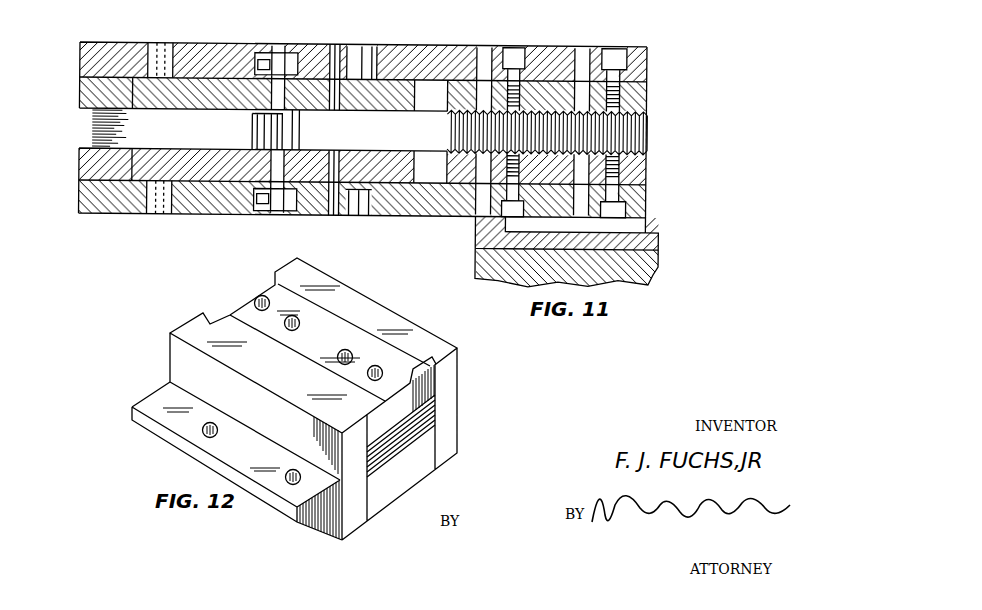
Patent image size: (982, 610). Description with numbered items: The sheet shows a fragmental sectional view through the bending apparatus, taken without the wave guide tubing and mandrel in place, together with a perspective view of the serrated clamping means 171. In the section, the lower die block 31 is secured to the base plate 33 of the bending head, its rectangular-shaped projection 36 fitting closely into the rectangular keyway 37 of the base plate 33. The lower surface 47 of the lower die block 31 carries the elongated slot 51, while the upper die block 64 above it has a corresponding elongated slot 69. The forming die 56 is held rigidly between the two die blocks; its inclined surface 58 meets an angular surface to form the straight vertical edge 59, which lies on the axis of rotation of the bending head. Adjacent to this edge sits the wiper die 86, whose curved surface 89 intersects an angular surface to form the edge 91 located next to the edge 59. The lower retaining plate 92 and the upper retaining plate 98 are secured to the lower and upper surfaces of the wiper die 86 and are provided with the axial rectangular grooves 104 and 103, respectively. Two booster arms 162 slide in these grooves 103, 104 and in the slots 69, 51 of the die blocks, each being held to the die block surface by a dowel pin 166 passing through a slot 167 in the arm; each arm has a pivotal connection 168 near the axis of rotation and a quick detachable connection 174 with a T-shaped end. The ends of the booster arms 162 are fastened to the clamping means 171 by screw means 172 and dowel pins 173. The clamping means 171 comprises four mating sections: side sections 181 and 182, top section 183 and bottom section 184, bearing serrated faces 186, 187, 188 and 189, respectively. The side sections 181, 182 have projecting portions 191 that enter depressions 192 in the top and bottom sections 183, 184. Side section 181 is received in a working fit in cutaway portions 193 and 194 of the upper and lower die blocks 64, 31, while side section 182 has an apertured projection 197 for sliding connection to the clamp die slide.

In FIG. 11, the lower die block 31 is at (167, 146).
In FIG. 11, the base plate 33 is at (647, 237).
In FIG. 11, the rectangular-shaped projection 36 is at (647, 222).
In FIG. 11, the rectangular keyway 37 is at (635, 230).
In FIG. 11, the lower surface of the lower die block 47 is at (453, 204).
In FIG. 11, the elongated slot 51 is at (355, 142).
In FIG. 11, the forming die 56 is at (393, 106).
In FIG. 11, the inclined surface 58 is at (291, 118).
In FIG. 11, the straight vertical edge 59 is at (283, 127).
In FIG. 11, the upper die block 64 is at (222, 74).
In FIG. 11, the elongated slot 69 is at (354, 82).
In FIG. 11, the wiper die 86 is at (88, 125).
In FIG. 11, the curved surface 89 is at (273, 109).
In FIG. 11, the edge 91 is at (270, 139).
In FIG. 11, the lower retaining plate 92 is at (78, 160).
In FIG. 11, the upper retaining plate 98 is at (80, 79).
In FIG. 11, the rectangular groove 103 is at (362, 95).
In FIG. 11, the rectangular groove 104 is at (212, 182).
In FIG. 11, the booster arm 162 is at (648, 56).
In FIG. 11, the dowel pin 166 is at (341, 44).
In FIG. 11, the slot 167 is at (373, 47).
In FIG. 11, the pivotal connection 168 is at (281, 44).
In FIG. 11, the serrated clamping means 171 is at (650, 97).
In FIG. 12, the serrated clamping means 171 is at (434, 322).
In FIG. 11, the screw means 172 is at (513, 44).
In FIG. 11, the dowel pin 173 is at (483, 44).
In FIG. 11, the quick detachable connection 174 is at (166, 40).
In FIG. 11, the side section 181 is at (650, 123).
In FIG. 12, the side section 181 is at (448, 342).
In FIG. 12, the side section 182 is at (188, 328).
In FIG. 11, the top section 183 is at (648, 78).
In FIG. 12, the top section 183 is at (428, 385).
In FIG. 11, the bottom section 184 is at (647, 175).
In FIG. 12, the bottom section 184 is at (412, 480).
In FIG. 11, the serrated face 186 is at (648, 135).
In FIG. 12, the serrated face 186 is at (432, 415).
In FIG. 12, the serrated face 187 is at (368, 463).
In FIG. 11, the serrated face 188 is at (650, 110).
In FIG. 12, the serrated face 188 is at (392, 425).
In FIG. 11, the serrated face 189 is at (640, 158).
In FIG. 12, the serrated face 189 is at (423, 447).
In FIG. 12, the projecting portion 191 is at (290, 276).
In FIG. 12, the depression 192 is at (313, 329).
In FIG. 11, the cutaway portion 193 is at (418, 92).
In FIG. 11, the cutaway portion 194 is at (418, 159).
In FIG. 12, the apertured projection 197 is at (147, 403).